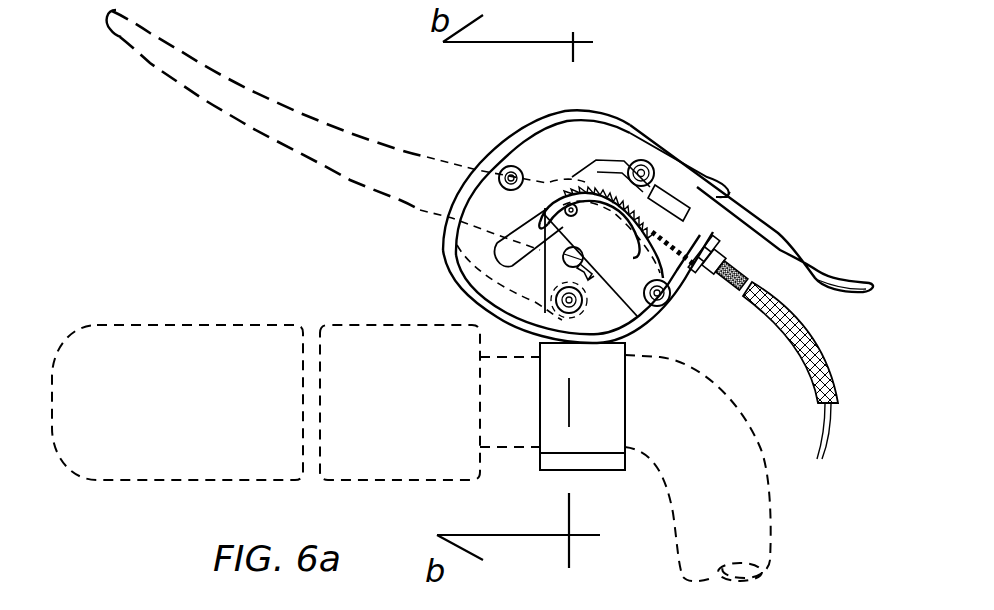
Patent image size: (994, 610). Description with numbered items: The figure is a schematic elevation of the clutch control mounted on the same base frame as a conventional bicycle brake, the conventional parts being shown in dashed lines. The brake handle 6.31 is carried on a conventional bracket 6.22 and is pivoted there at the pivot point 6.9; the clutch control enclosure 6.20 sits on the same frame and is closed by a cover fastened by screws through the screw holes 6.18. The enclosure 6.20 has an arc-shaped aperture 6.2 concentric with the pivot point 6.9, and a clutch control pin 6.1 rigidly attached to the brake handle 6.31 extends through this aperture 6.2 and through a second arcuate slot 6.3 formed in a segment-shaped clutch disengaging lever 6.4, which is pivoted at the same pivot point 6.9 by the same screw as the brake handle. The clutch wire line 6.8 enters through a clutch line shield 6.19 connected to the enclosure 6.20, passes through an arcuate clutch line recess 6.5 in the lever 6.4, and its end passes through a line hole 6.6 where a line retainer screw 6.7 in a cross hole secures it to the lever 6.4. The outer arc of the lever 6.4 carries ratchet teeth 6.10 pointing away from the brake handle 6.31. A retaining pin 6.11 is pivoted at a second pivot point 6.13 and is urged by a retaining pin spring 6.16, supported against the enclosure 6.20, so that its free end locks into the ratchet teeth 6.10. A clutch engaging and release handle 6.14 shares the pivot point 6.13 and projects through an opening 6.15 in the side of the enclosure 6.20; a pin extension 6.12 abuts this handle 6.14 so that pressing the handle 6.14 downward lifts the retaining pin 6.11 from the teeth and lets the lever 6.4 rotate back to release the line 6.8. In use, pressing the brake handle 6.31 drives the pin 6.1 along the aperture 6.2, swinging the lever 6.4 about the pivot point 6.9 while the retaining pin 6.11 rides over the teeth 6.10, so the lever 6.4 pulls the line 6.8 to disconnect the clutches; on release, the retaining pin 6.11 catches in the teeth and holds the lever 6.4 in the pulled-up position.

The clutch control pin 6.1 is at (570, 205).
The arc-shaped aperture 6.2 is at (563, 255).
The arcuate slot 6.3 is at (600, 197).
The clutch disengaging lever 6.4 is at (563, 210).
The clutch line recess 6.5 is at (683, 268).
The line hole 6.6 is at (498, 247).
The line retainer screw 6.7 is at (578, 262).
The clutch wire line 6.8 is at (830, 437).
The pivot point 6.9 is at (556, 299).
The ratchet teeth 6.10 is at (597, 178).
The retaining pin 6.11 is at (607, 160).
The pin extension 6.12 is at (702, 173).
The pivot point 6.13 is at (665, 150).
The clutch engaging and release handle 6.14 is at (777, 238).
The opening 6.15 is at (730, 190).
The retaining pin spring 6.16 is at (646, 155).
The screw holes 6.18 is at (504, 170).
The clutch line shield 6.19 is at (830, 330).
The clutch control enclosure 6.20 is at (537, 120).
The bracket 6.22 is at (611, 413).
The brake handle 6.31 is at (302, 82).